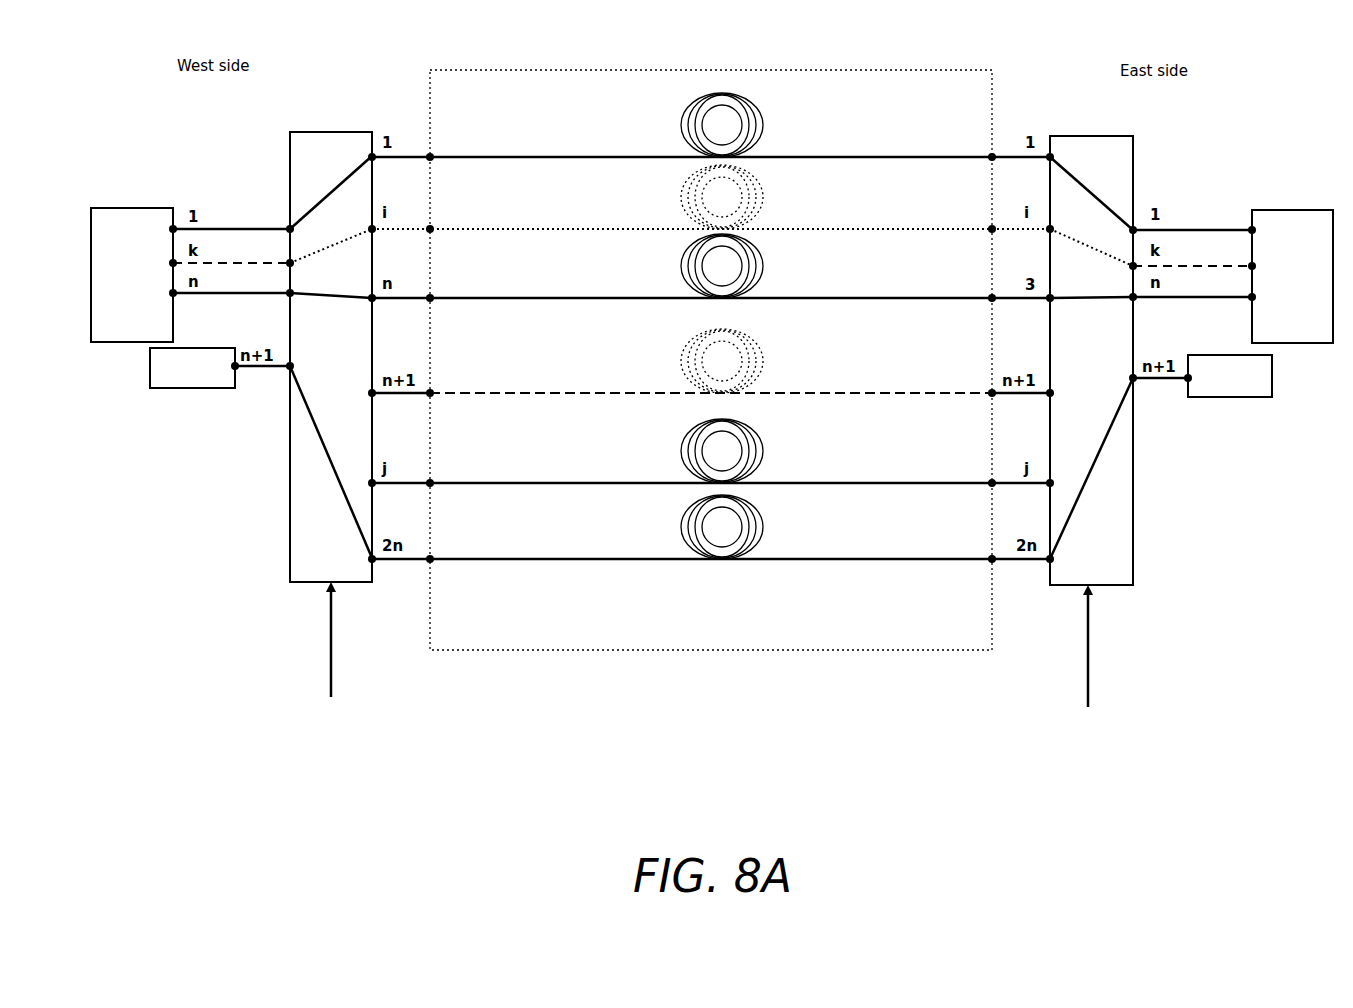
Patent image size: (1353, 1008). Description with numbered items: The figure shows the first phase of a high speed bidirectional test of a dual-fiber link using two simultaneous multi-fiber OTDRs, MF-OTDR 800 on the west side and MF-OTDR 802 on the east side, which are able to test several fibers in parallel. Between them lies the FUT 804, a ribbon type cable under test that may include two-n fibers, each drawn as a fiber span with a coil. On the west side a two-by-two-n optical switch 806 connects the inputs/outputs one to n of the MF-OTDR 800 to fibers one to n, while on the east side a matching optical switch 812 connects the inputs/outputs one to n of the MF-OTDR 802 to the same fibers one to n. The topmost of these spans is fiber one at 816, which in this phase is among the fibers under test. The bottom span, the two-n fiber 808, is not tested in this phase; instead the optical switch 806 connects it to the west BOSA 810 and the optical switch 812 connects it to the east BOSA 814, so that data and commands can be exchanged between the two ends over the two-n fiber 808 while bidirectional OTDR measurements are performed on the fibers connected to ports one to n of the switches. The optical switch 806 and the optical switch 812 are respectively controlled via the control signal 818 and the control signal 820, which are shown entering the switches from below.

The multi-fiber OTDR 800 is at (133, 204).
The multi-fiber OTDR 802 is at (1294, 205).
The FUT ribbon type cable under test 804 is at (424, 88).
The optical switch 806 is at (304, 588).
The 2n fiber 808 is at (676, 566).
The BOSA 810 is at (186, 394).
The optical switch 812 is at (1066, 591).
The BOSA 814 is at (1230, 402).
The fiber 1 816 is at (636, 150).
The control signal 818 is at (325, 652).
The control signal 820 is at (1082, 663).